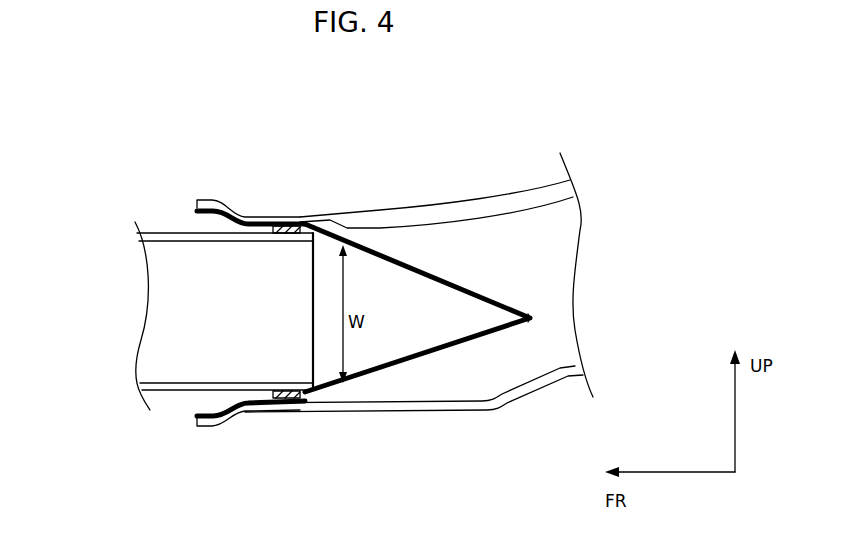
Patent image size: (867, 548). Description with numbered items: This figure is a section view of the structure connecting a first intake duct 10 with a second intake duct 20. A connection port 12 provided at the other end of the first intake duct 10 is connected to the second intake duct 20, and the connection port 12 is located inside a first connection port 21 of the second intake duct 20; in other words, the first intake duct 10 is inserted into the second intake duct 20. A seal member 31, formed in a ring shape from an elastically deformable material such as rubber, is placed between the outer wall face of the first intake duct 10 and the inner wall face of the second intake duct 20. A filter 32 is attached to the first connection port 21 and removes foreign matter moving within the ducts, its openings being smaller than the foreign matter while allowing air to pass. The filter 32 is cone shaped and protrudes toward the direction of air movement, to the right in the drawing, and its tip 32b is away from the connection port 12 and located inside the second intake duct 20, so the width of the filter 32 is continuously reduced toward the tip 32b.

The first intake duct 10 is at (168, 232).
The connection port 12 is at (313, 313).
The second intake duct 20 is at (456, 412).
The first connection port 21 is at (197, 205).
The seal member 31 is at (288, 234).
The filter 32 is at (413, 268).
The tip 32b is at (533, 310).